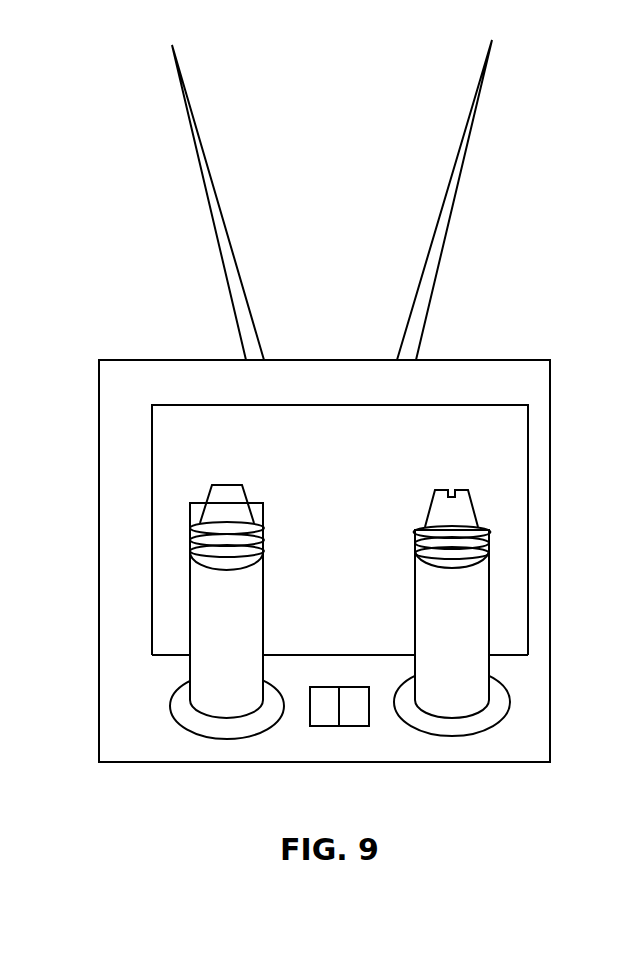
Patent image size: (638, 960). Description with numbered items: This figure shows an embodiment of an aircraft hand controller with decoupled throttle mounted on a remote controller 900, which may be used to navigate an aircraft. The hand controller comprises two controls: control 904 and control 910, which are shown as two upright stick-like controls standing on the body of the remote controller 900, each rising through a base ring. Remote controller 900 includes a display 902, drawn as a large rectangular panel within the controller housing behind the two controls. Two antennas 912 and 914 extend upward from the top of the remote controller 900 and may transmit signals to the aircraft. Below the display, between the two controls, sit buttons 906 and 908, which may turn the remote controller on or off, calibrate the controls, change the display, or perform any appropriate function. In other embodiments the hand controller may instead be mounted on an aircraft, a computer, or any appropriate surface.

The remote controller 900 is at (175, 360).
The display 902 is at (227, 405).
The control 904 is at (190, 618).
The button 906 is at (327, 726).
The button 908 is at (345, 726).
The control 910 is at (415, 610).
The antenna 912 is at (206, 200).
The antenna 914 is at (450, 183).